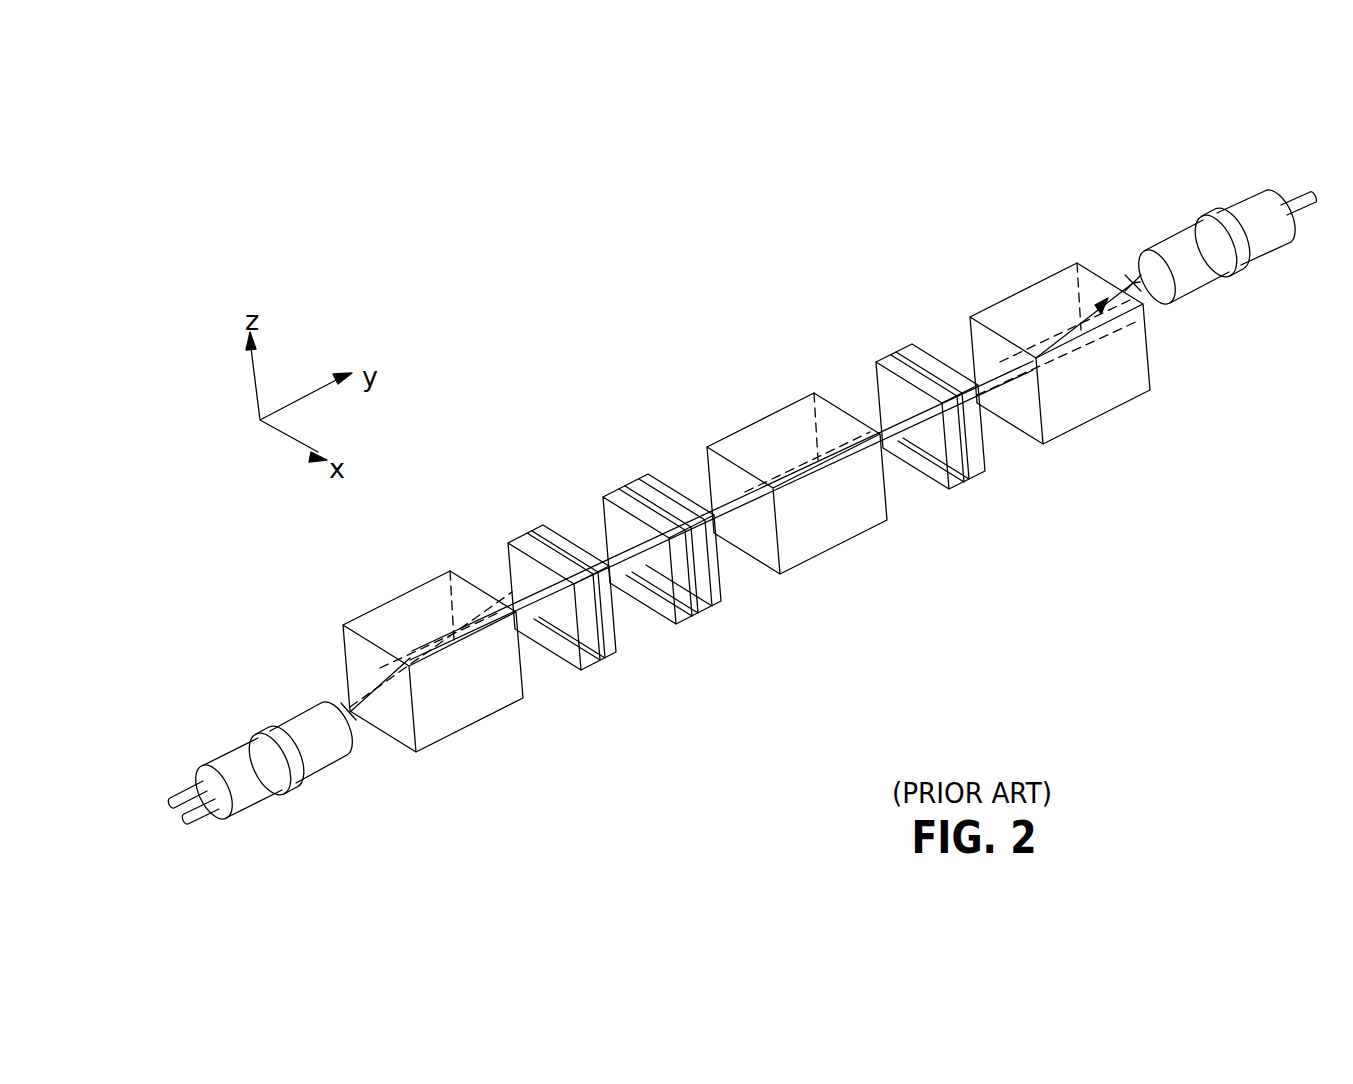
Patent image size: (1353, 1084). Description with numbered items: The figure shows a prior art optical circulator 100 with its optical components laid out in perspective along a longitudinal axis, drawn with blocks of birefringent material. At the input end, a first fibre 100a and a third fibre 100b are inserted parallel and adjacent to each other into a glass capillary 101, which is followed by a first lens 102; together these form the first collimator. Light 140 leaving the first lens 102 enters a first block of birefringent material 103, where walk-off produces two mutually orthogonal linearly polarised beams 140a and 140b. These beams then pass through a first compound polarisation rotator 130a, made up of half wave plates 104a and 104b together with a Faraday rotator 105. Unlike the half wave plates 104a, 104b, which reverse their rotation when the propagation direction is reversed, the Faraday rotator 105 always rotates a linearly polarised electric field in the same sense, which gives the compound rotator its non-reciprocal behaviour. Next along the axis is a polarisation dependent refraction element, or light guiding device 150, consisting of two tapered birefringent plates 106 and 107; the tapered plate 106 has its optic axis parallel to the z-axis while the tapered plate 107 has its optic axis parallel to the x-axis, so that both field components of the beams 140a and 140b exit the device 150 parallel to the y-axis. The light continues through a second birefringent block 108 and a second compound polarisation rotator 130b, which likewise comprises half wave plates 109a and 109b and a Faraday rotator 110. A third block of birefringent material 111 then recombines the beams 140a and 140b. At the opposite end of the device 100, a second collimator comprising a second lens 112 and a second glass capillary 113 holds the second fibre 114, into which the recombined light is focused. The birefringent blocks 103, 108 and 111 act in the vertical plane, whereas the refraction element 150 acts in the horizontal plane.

The optical circulator 100 is at (691, 266).
The first fibre 100a is at (200, 820).
The third fibre 100b is at (181, 790).
The glass capillary 101 is at (243, 745).
The first lens 102 is at (317, 788).
The first block of birefringent material 103 is at (378, 604).
The half wave plate 104a is at (506, 546).
The half wave plate 104b is at (557, 663).
The Faraday rotator 105 is at (611, 583).
The tapered birefringent plate 106 is at (605, 496).
The tapered birefringent plate 107 is at (712, 612).
The second birefringent block 108 is at (766, 406).
The half wave plate 109a is at (868, 368).
The half wave plate 109b is at (940, 490).
The Faraday rotator 110 is at (906, 346).
The third block of birefringent material 111 is at (1094, 421).
The second lens 112 is at (1173, 232).
The second glass capillary 113 is at (1243, 197).
The second fibre 114 is at (1304, 210).
The first compound polarisation rotator 130a is at (520, 512).
The second compound polarisation rotator 130b is at (1016, 520).
The laser beam 140 is at (350, 716).
The linearly polarised beam 140a is at (442, 667).
The linearly polarised beam 140b is at (442, 630).
The polarisation dependent refraction element 150 is at (677, 456).